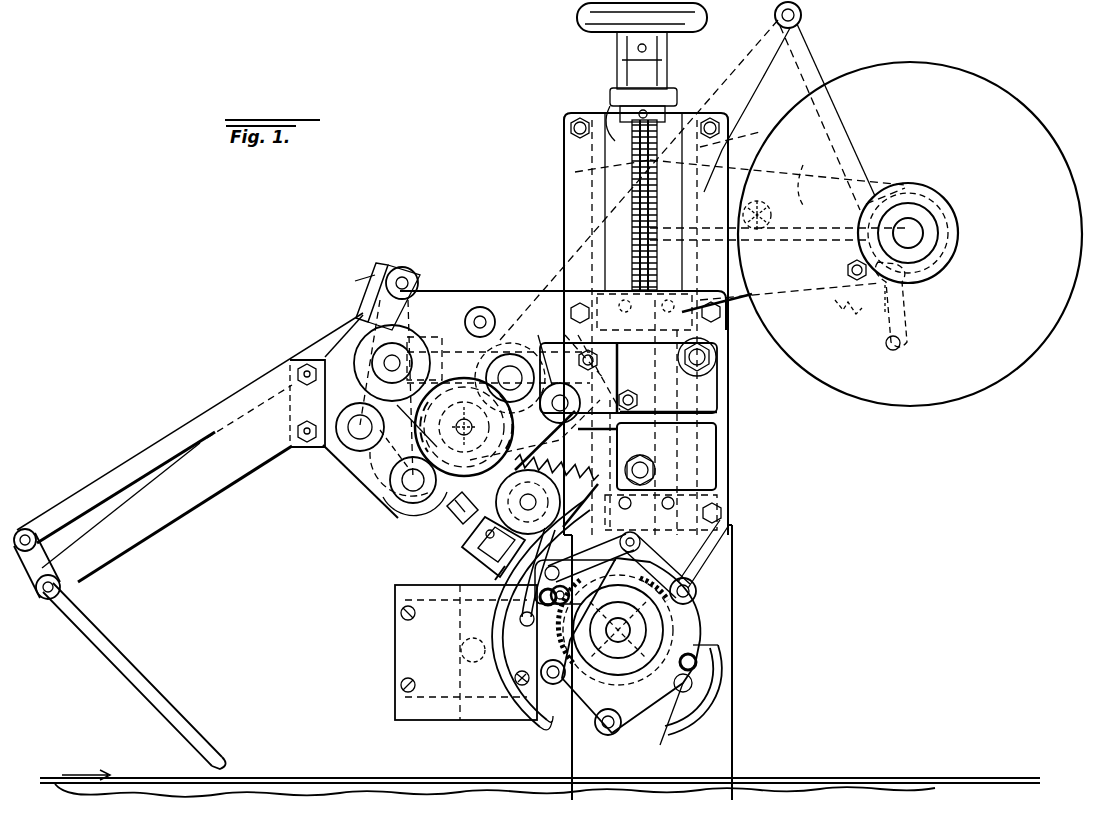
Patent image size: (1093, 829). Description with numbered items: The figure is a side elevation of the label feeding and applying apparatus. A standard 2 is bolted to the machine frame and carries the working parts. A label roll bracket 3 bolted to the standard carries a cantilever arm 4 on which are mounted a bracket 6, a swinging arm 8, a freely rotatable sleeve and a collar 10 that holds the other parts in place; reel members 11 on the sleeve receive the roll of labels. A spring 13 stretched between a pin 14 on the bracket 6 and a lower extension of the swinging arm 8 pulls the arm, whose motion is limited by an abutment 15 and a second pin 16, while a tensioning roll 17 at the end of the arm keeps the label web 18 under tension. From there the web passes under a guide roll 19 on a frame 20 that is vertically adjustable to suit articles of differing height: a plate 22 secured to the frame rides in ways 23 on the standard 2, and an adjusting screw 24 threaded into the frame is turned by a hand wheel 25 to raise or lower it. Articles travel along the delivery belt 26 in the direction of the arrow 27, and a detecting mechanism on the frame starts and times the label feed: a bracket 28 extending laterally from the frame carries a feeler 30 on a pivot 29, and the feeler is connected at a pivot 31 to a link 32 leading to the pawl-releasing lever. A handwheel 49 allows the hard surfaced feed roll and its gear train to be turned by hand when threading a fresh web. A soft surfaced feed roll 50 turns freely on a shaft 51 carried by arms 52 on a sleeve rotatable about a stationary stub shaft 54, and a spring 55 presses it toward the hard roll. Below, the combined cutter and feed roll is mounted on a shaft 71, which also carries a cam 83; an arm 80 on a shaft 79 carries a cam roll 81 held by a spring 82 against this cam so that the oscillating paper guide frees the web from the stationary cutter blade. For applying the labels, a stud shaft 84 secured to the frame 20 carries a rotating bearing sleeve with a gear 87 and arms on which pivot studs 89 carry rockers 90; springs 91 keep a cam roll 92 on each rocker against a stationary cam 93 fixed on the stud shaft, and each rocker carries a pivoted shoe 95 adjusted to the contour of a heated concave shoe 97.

The standard 2 is at (731, 722).
The label roll bracket 3 is at (736, 302).
The cantilever arm 4 is at (918, 234).
The bracket 6 is at (804, 174).
The swinging arm 8 is at (818, 58).
The collar 10 is at (930, 242).
The reel members 11 is at (1020, 124).
The spring 13 is at (840, 308).
The pin 14 is at (758, 201).
The abutment 15 is at (908, 321).
The second pin 16 is at (840, 275).
The tensioning roll 17 is at (650, 171).
The label web 18 is at (708, 96).
The guide roll 19 is at (482, 308).
The frame 20 is at (445, 292).
The plate 22 is at (648, 525).
The ways 23 is at (575, 172).
The adjusting screw 24 is at (612, 130).
The hand wheel 25 is at (577, 18).
The delivery belt 26 is at (433, 778).
The arrow 27 is at (83, 775).
The bracket 28 is at (210, 490).
The pivot 29 is at (61, 587).
The feeler 30 is at (210, 752).
The pivot 31 is at (33, 532).
The link 32 is at (126, 462).
The handwheel 49 is at (456, 382).
The soft surfaced feed roll 50 is at (404, 497).
The shaft 51 is at (413, 490).
The arms 52 is at (394, 465).
The stationary stub shaft 54 is at (350, 438).
The spring 55 is at (372, 442).
The shaft 71 is at (535, 505).
The shaft 79 is at (540, 352).
The arm 80 is at (647, 456).
The cam roll 81 is at (459, 513).
The spring 82 is at (663, 512).
The cam 83 is at (485, 568).
The stud shaft 84 is at (618, 622).
The gear 87 is at (562, 635).
The pivot studs 89 is at (665, 566).
The rockers 90 is at (696, 575).
The springs 91 is at (601, 730).
The cam roll 92 is at (696, 596).
The stationary cam 93 is at (682, 630).
The shoe 95 is at (690, 714).
The concave shoe 97 is at (551, 732).